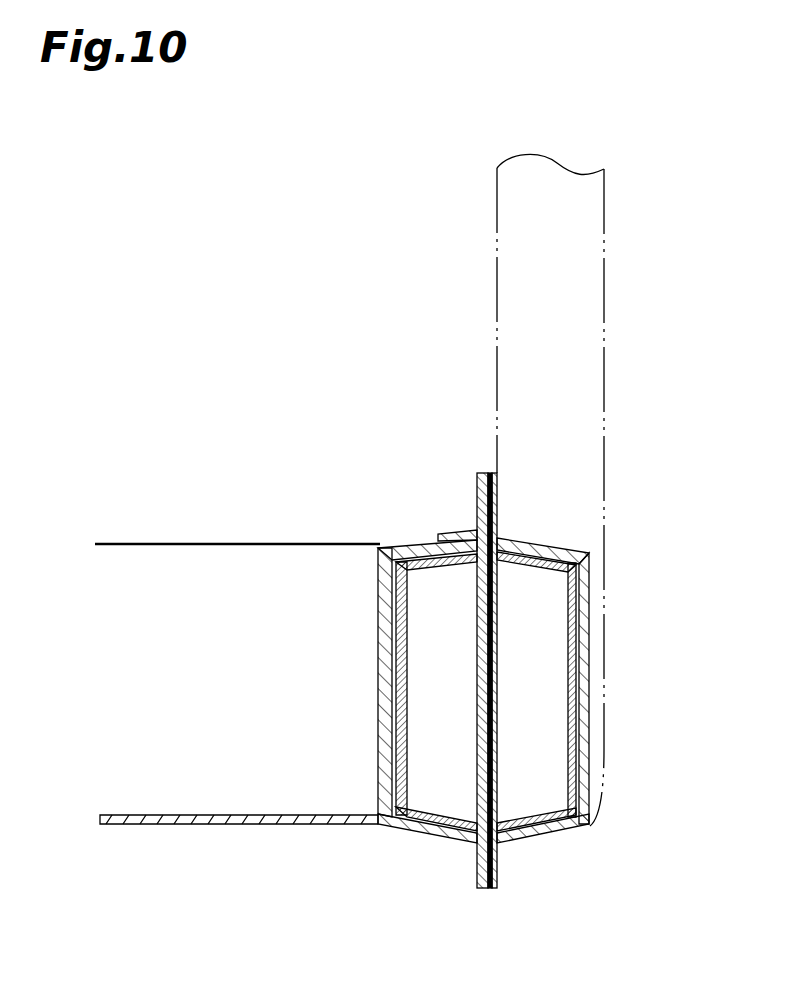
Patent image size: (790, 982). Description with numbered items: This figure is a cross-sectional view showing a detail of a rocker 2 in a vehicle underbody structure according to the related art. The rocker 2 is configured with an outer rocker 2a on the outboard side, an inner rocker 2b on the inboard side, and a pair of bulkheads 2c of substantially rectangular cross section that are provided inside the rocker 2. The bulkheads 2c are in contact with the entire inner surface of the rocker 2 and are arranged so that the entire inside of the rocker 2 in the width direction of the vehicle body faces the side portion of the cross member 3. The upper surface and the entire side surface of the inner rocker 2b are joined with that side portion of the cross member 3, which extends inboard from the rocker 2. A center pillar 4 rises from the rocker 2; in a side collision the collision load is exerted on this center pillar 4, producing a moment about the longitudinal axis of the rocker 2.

The rocker 2 is at (401, 686).
The outer rocker 2a is at (538, 546).
The inner rocker 2b is at (436, 835).
The bulkheads 2c is at (494, 668).
The cross member 3 is at (197, 532).
The center pillar 4 is at (604, 427).